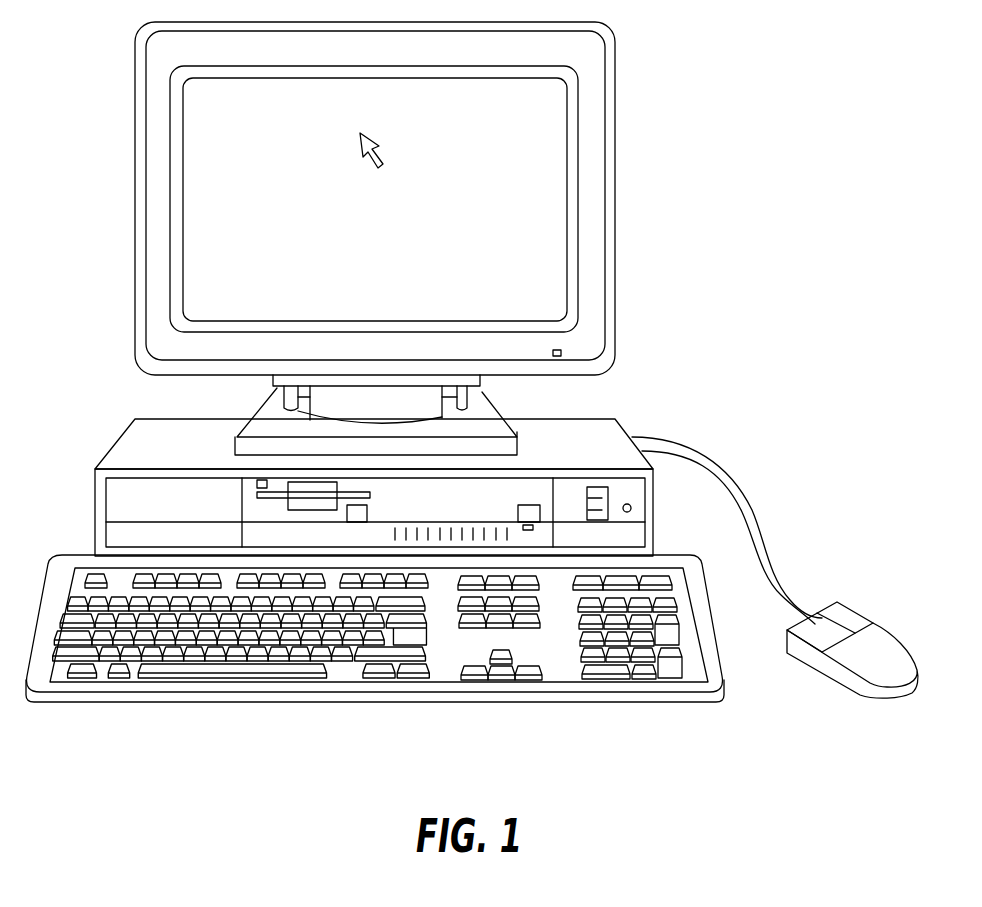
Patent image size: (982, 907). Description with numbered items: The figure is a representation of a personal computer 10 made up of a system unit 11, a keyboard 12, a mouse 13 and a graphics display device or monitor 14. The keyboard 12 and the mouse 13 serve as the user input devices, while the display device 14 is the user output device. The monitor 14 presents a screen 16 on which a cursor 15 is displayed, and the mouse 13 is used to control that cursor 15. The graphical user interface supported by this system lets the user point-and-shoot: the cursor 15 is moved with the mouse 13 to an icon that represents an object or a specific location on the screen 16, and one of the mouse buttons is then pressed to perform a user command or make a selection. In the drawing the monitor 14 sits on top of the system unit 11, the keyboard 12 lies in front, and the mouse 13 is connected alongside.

The personal computer 10 is at (798, 277).
The system unit 11 is at (114, 441).
The keyboard 12 is at (214, 703).
The mouse 13 is at (858, 615).
The graphics display device or monitor 14 is at (616, 188).
The cursor 15 is at (377, 142).
The screen 16 is at (396, 241).